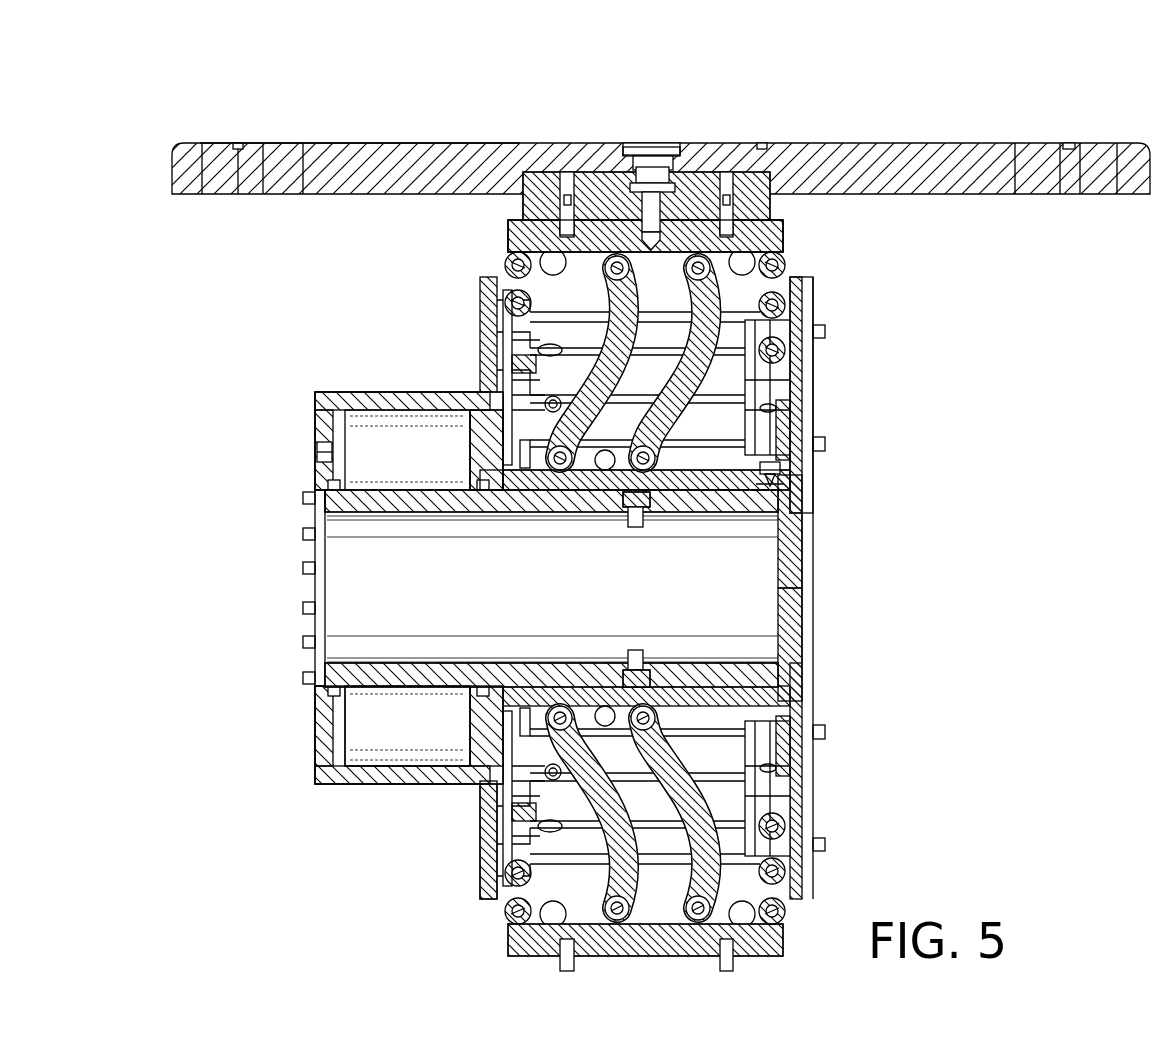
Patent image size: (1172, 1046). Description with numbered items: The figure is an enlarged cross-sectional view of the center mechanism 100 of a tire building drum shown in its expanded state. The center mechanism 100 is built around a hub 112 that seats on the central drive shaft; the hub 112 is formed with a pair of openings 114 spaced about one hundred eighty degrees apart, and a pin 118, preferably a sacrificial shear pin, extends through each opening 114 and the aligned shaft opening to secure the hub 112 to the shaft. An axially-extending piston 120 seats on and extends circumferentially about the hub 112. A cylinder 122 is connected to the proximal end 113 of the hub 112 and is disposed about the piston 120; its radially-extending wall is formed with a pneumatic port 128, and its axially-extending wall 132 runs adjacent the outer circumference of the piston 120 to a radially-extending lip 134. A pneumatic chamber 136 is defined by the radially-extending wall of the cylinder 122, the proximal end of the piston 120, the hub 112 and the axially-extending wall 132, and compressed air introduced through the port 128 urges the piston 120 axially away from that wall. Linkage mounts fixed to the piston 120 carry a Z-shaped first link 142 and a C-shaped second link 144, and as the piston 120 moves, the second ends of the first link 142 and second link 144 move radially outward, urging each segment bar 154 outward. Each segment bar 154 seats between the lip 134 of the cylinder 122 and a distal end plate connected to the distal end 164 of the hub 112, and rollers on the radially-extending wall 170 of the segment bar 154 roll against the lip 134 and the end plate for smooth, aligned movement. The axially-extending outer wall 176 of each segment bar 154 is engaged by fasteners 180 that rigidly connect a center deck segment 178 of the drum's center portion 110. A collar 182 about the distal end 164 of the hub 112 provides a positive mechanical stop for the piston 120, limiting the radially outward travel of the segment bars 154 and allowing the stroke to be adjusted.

The center mechanism 100 is at (872, 108).
The center portion 110 is at (967, 143).
The hub 112 is at (378, 687).
The proximal end 113 is at (338, 675).
The openings 114 is at (632, 522).
The pin 118 is at (637, 650).
The piston 120 is at (508, 478).
The cylinder 122 is at (315, 402).
The pneumatic port 128 is at (318, 447).
The axially-extending wall 132 is at (360, 786).
The radially-extending lip 134 is at (497, 828).
The pneumatic chamber 136 is at (365, 728).
The first link 142 is at (595, 478).
The second link 144 is at (720, 418).
The segment bar 154 is at (586, 265).
The distal end 164 is at (804, 363).
The radially-extending wall 170 is at (594, 268).
The axially-extending outer wall 176 is at (682, 233).
The center deck segment 178 is at (370, 148).
The fastener 180 is at (650, 168).
The collar 182 is at (760, 485).